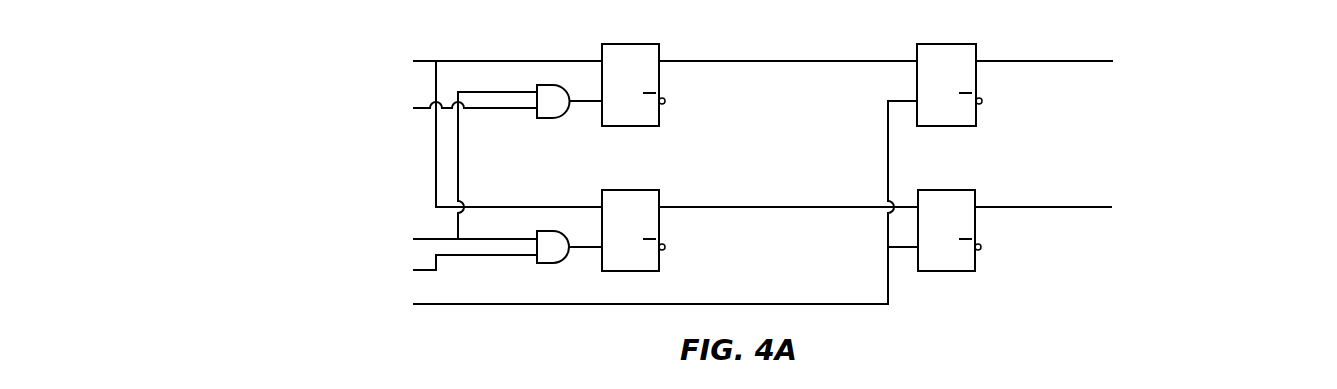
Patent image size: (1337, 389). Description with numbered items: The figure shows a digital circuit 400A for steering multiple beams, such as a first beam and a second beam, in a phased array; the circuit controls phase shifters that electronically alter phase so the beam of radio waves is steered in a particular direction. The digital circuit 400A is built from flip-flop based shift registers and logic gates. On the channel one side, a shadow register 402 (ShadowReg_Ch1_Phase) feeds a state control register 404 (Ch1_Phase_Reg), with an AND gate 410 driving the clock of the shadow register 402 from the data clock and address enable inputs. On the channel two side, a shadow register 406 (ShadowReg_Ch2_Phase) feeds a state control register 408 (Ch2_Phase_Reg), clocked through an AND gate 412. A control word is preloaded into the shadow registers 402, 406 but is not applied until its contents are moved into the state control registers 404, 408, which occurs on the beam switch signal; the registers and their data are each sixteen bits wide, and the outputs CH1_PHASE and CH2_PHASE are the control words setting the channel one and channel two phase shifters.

The digital circuit 400A is at (116, 104).
The shadow register 402 is at (647, 126).
The state control register 404 is at (962, 126).
The shadow register 406 is at (647, 271).
The state control register 408 is at (962, 271).
The AND gate 410 is at (538, 84).
The AND gate 412 is at (555, 263).